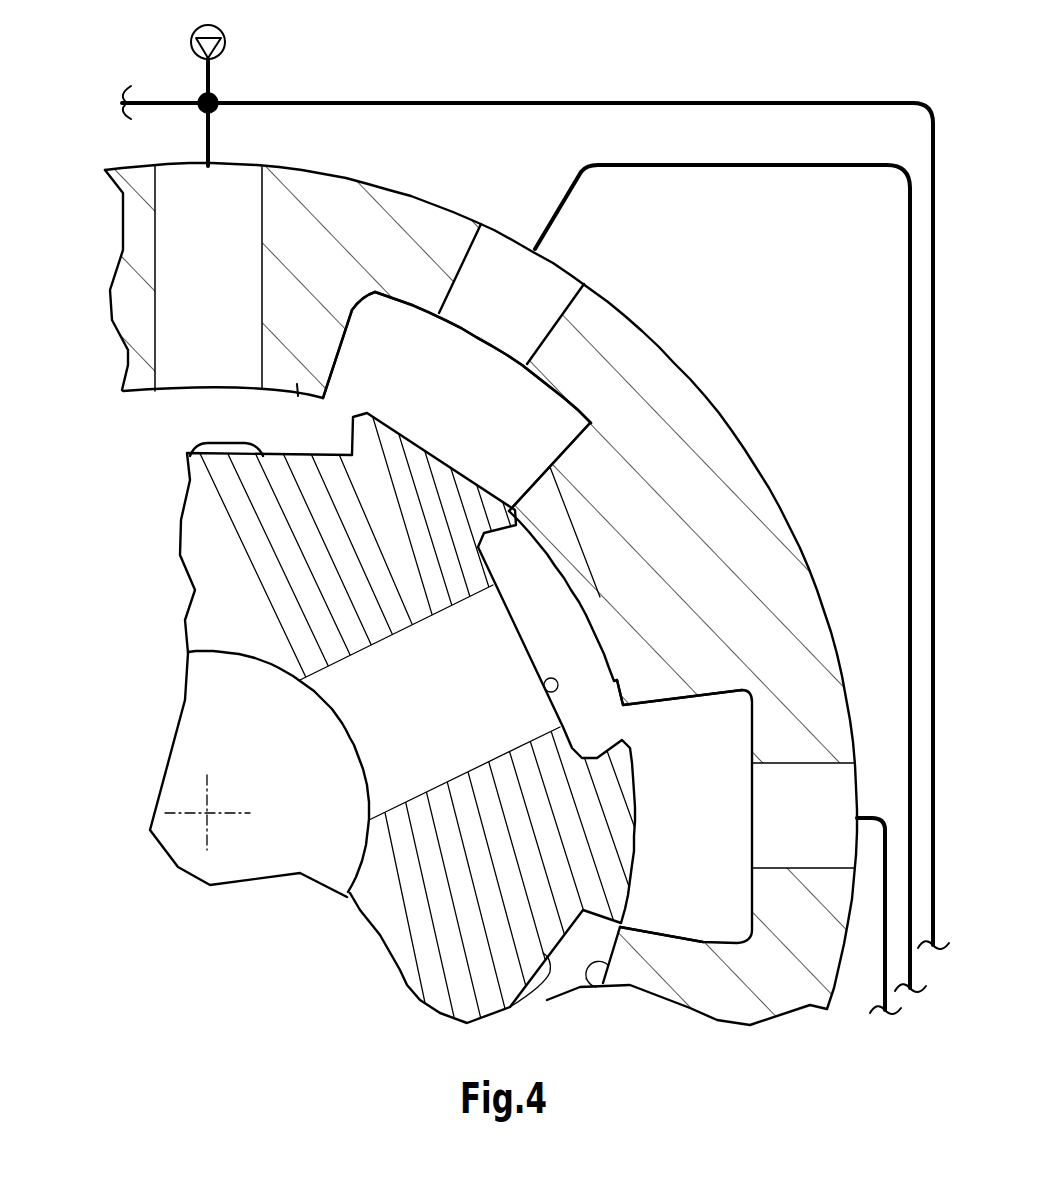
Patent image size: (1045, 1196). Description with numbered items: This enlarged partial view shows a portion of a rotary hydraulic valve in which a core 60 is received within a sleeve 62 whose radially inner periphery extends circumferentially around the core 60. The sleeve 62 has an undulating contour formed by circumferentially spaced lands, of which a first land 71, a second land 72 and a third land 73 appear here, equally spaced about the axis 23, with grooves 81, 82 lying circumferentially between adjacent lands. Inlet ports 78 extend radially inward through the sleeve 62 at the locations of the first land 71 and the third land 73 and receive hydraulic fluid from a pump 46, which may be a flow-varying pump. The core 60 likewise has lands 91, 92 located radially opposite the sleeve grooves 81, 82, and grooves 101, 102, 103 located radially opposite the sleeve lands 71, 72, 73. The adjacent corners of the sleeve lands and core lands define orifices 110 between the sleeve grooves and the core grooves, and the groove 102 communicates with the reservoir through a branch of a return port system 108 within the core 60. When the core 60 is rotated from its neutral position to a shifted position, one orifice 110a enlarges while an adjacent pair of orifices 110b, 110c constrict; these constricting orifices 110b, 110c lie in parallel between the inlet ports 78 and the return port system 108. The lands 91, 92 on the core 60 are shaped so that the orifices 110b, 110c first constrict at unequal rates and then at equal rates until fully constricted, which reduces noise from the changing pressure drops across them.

The axis 23 is at (208, 812).
The pump 46 is at (200, 30).
The core 60 is at (188, 523).
The sleeve 62 is at (123, 232).
The first land 71 is at (298, 395).
The second land 72 is at (600, 597).
The third land 73 is at (590, 996).
The inlet port 78 is at (248, 180).
The groove 81 is at (417, 323).
The groove 82 is at (737, 755).
The land 91 is at (436, 462).
The land 92 is at (612, 818).
The groove 101 is at (190, 455).
The groove 102 is at (544, 686).
The groove 103 is at (550, 975).
The return port system 108 is at (322, 781).
The orifice 110 is at (312, 391).
The enlarging orifice 110a is at (630, 720).
The constricting orifice 110b is at (514, 501).
The constricting orifice 110c is at (632, 935).